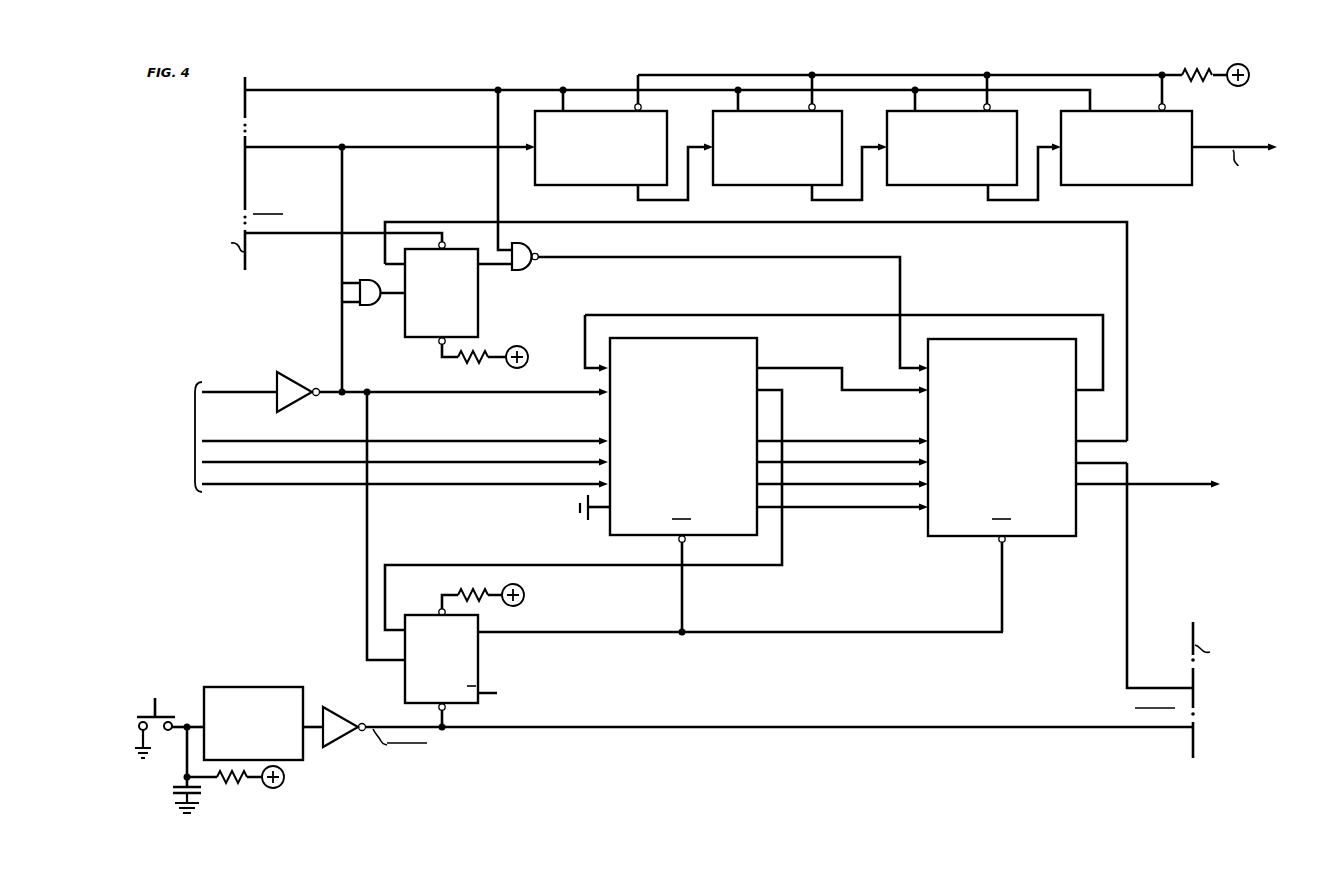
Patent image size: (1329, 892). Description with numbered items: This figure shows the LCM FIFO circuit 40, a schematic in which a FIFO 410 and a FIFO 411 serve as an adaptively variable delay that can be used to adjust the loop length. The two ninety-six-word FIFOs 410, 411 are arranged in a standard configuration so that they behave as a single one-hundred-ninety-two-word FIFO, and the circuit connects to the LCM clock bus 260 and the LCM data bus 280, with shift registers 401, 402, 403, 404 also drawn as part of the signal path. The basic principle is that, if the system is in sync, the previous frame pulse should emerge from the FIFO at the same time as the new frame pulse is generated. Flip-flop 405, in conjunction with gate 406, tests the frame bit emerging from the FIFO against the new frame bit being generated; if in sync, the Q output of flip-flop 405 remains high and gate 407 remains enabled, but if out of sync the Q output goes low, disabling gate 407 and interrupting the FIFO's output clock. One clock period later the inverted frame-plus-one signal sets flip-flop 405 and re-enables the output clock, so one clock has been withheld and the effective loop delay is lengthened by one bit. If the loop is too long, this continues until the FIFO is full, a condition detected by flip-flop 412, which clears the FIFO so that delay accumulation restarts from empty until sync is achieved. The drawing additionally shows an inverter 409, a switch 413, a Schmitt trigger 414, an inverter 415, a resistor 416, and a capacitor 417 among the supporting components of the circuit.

The LCM FIFO circuit 40 is at (732, 431).
The LCM clock bus 260 is at (245, 178).
The LCM data bus 280 is at (1196, 738).
The shift register 401 is at (606, 185).
The shift register 402 is at (786, 185).
The shift register 403 is at (961, 185).
The shift register 404 is at (1129, 188).
The flip-flop 405 is at (405, 337).
The gate 406 is at (377, 304).
The gate 407 is at (527, 272).
The inverter 409 is at (312, 385).
The FIFO 410 is at (757, 342).
The FIFO 411 is at (1046, 537).
The flip-flop 412 is at (479, 659).
The switch 413 is at (163, 711).
The Schmitt trigger 414 is at (235, 687).
The inverter 415 is at (341, 700).
The resistor 416 is at (232, 785).
The capacitor 417 is at (172, 792).